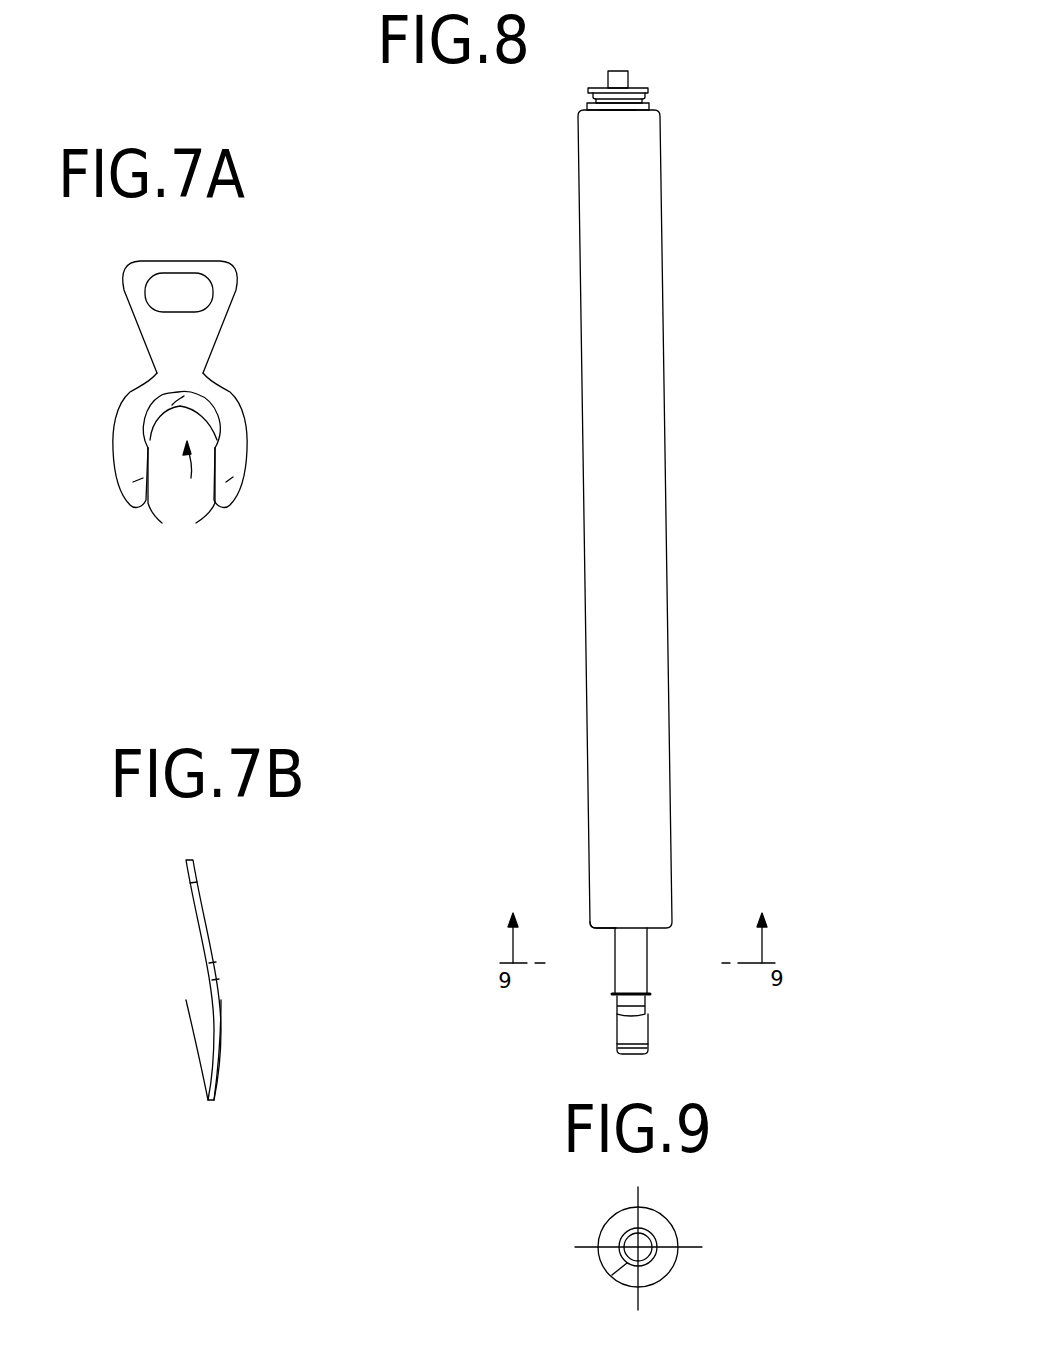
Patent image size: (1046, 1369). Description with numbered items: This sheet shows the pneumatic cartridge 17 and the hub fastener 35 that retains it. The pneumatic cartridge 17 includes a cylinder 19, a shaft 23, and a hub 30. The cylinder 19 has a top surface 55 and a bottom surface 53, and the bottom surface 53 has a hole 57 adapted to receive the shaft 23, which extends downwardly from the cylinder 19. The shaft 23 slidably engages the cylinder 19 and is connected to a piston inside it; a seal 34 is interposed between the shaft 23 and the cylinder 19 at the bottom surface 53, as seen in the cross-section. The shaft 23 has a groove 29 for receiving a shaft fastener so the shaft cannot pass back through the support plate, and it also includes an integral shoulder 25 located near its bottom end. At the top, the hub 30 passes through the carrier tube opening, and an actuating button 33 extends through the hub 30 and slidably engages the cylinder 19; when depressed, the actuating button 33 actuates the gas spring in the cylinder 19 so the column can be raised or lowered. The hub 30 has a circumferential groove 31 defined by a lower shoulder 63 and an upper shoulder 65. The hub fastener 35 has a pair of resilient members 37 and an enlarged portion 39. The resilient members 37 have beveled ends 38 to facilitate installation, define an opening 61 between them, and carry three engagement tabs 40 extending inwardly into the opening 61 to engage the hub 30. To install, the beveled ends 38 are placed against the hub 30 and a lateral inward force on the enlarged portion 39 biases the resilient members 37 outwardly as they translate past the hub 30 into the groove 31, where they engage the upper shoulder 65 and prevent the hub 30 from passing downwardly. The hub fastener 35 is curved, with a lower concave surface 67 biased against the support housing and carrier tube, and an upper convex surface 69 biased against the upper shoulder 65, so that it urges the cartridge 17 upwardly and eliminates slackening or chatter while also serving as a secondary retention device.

In FIG. 8, the pneumatic cartridge 17 is at (668, 519).
In FIG. 8, the cylinder 19 is at (645, 867).
In FIG. 8, the shaft 23 is at (628, 968).
In FIG. 9, the shaft 23 is at (645, 1253).
In FIG. 8, the shoulder 25 is at (652, 994).
In FIG. 8, the groove 29 is at (649, 1044).
In FIG. 8, the hub 30 is at (635, 88).
In FIG. 8, the circumferential groove 31 is at (643, 97).
In FIG. 8, the actuating button 33 is at (617, 70).
In FIG. 9, the seal 34 is at (655, 1235).
In FIG. 7B, the hub fastener 35 is at (232, 992).
In FIG. 7A, the resilient members 37 is at (128, 440).
In FIG. 7A, the beveled ends 38 is at (181, 499).
In FIG. 7A, the enlarged portion 39 is at (178, 262).
In FIG. 7A, the engagement tabs 40 is at (205, 430).
In FIG. 8, the bottom surface 53 is at (602, 934).
In FIG. 9, the bottom surface 53 is at (647, 1218).
In FIG. 8, the top surface 55 is at (602, 88).
In FIG. 9, the hole 57 is at (612, 1275).
In FIG. 7A, the opening 61 is at (177, 467).
In FIG. 8, the lower shoulder 63 is at (610, 100).
In FIG. 8, the upper shoulder 65 is at (633, 103).
In FIG. 7B, the lower concave surface 67 is at (217, 1012).
In FIG. 7B, the upper convex surface 69 is at (222, 1012).